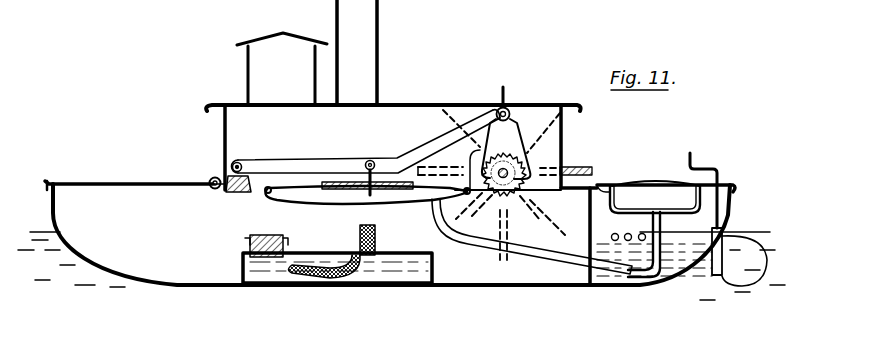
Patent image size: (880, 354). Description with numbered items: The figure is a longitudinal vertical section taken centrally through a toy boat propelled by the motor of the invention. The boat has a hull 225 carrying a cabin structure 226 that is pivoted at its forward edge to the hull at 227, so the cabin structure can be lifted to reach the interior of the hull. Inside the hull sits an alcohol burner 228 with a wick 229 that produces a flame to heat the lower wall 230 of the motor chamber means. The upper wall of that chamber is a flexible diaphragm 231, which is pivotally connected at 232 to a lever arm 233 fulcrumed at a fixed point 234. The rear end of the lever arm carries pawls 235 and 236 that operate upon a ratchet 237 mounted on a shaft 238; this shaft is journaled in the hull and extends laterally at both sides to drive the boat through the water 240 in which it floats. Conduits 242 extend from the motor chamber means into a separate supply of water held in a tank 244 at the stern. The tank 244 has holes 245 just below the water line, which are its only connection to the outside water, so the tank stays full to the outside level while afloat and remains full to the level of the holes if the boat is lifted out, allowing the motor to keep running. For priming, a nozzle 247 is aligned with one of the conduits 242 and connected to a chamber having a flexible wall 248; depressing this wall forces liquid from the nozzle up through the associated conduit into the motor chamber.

The hull 225 is at (495, 286).
The cabin structure 226 is at (403, 105).
The pivot 227 is at (212, 179).
The alcohol burner 228 is at (436, 270).
The wick 229 is at (358, 225).
The lower wall of the motor chamber means 230 is at (388, 206).
The flexible diaphragm 231 is at (296, 178).
The pivotal connection 232 is at (373, 158).
The lever arm 233 is at (333, 158).
The fixed fulcrum point 234 is at (242, 164).
The pawl 235 is at (486, 150).
The pawl 236 is at (527, 151).
The ratchet 237 is at (493, 191).
The shaft 238 is at (510, 172).
The water 240 is at (764, 222).
The conduits 242 is at (512, 246).
The tank 244 is at (588, 223).
The holes 245 is at (642, 233).
The nozzle 247 is at (633, 279).
The flexible wall 248 is at (641, 183).